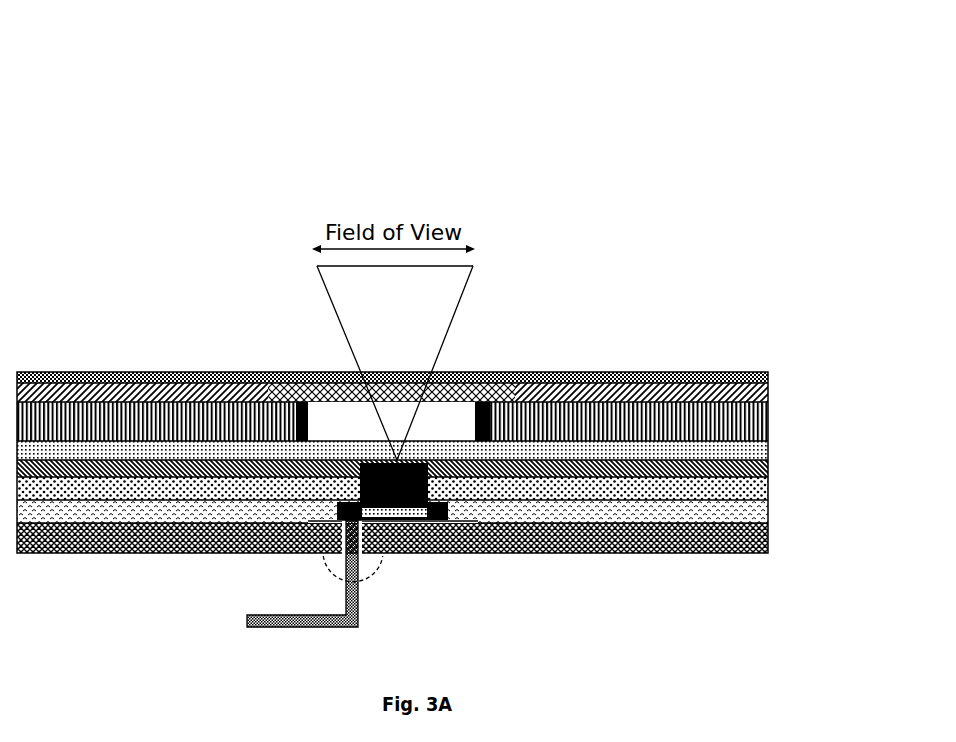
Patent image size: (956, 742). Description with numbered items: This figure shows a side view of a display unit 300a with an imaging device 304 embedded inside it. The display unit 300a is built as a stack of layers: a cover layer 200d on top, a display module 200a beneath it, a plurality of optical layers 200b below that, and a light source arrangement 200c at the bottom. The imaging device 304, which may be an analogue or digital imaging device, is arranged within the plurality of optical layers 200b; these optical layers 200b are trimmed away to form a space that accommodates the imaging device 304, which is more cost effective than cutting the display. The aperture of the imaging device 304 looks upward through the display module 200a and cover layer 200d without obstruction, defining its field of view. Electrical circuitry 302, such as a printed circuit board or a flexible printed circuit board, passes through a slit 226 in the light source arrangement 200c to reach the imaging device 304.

The display unit 300a is at (636, 82).
The cover layer 200d is at (771, 373).
The display module 200a is at (771, 403).
The plurality of optical layers 200b is at (771, 442).
The light source arrangement 200c is at (771, 501).
The imaging device 304 is at (448, 518).
The slit 226 is at (393, 572).
The electrical circuitry 302 is at (242, 622).